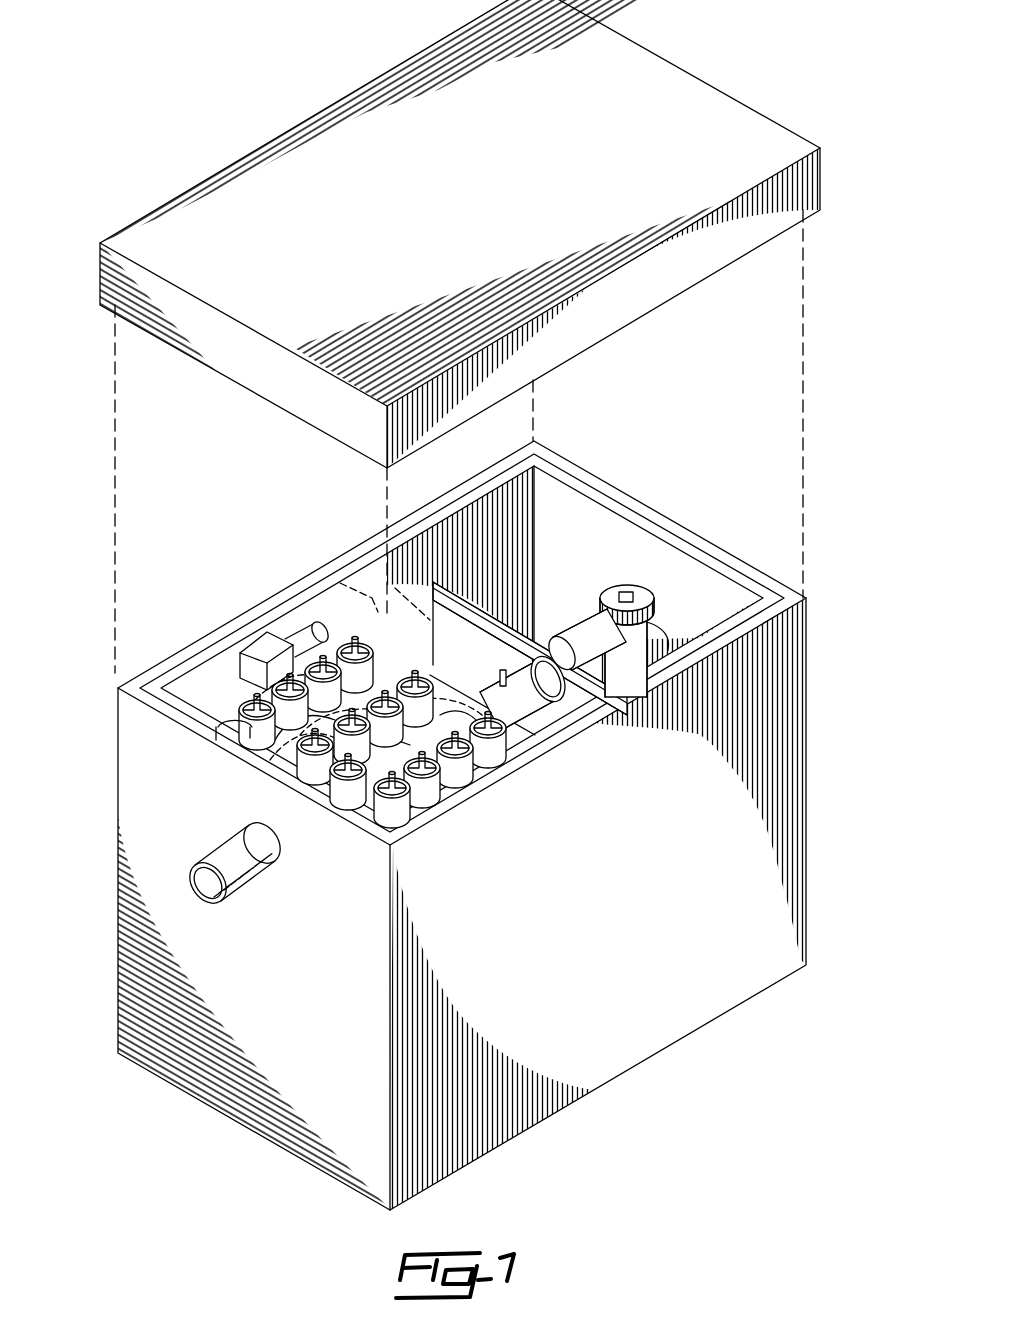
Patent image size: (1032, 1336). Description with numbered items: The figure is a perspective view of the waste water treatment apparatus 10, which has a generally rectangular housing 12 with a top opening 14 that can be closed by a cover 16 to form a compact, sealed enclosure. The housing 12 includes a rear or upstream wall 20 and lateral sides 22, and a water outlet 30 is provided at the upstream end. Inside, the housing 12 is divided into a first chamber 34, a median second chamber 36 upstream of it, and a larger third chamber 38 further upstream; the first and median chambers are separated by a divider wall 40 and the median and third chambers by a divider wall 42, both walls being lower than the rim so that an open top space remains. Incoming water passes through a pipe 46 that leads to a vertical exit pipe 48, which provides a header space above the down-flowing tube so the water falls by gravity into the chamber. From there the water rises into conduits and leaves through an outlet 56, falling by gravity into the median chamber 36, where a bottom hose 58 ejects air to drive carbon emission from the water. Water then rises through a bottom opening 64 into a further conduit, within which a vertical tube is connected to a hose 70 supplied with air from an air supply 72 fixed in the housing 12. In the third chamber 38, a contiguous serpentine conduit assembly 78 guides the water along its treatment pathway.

The apparatus 10 is at (822, 307).
The housing 12 is at (823, 634).
The top opening 14 is at (575, 500).
The cover 16 is at (643, 73).
The rear or upstream wall 20 is at (132, 766).
The lateral sides 22 is at (736, 988).
The water outlet 30 is at (206, 890).
The first chamber 34 is at (472, 516).
The second chamber 36 is at (354, 592).
The third chamber 38 is at (213, 674).
The divider wall 40 is at (392, 585).
The divider wall 42 is at (268, 643).
The pipe 46 is at (655, 620).
The vertical exit pipe 48 is at (615, 612).
The outlet 56 is at (575, 645).
The bottom hose 58 is at (532, 662).
The bottom opening 64 is at (527, 695).
The hose 70 is at (362, 582).
The air supply 72 is at (228, 617).
The serpentine conduit assembly 78 is at (458, 786).